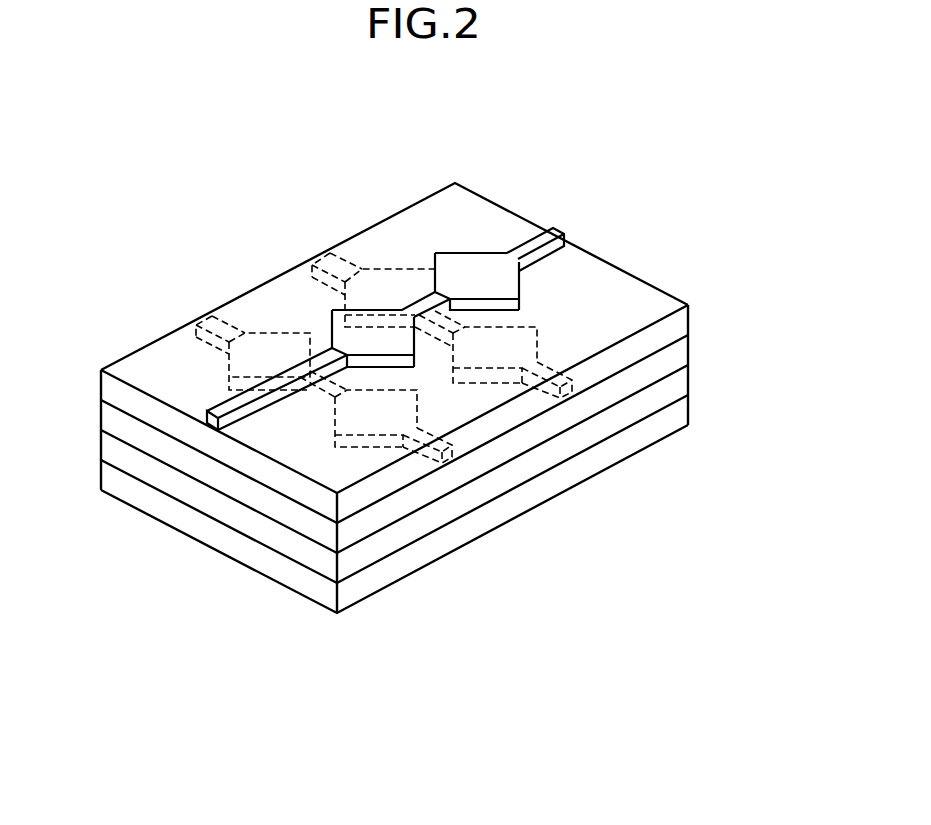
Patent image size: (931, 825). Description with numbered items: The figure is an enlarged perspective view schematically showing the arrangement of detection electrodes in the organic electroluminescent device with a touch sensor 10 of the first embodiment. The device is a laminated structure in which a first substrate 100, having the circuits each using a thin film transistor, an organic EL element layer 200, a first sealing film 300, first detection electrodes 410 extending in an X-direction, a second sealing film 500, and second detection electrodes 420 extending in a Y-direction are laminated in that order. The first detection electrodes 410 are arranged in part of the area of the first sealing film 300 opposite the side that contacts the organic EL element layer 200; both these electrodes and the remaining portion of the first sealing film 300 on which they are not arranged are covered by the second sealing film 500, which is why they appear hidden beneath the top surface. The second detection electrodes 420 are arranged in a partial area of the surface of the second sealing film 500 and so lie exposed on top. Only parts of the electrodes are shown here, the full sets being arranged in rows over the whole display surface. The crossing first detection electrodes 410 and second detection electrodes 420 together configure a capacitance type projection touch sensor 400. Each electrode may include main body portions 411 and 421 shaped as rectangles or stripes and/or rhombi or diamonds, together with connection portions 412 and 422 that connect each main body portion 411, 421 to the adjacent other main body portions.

The organic electroluminescent device with a touch sensor 10 is at (636, 240).
The first substrate 100 is at (690, 410).
The organic EL element layer 200 is at (690, 380).
The first sealing film 300 is at (690, 350).
The second sealing film 500 is at (690, 318).
The capacitance type projection touch sensor 400 is at (347, 403).
The second detection electrodes 420 is at (393, 143).
The main body portion 421 is at (338, 330).
The connection portion 422 is at (323, 353).
The first detection electrodes 410 is at (284, 650).
The main body portion 411 is at (337, 403).
The connection portion 412 is at (323, 392).